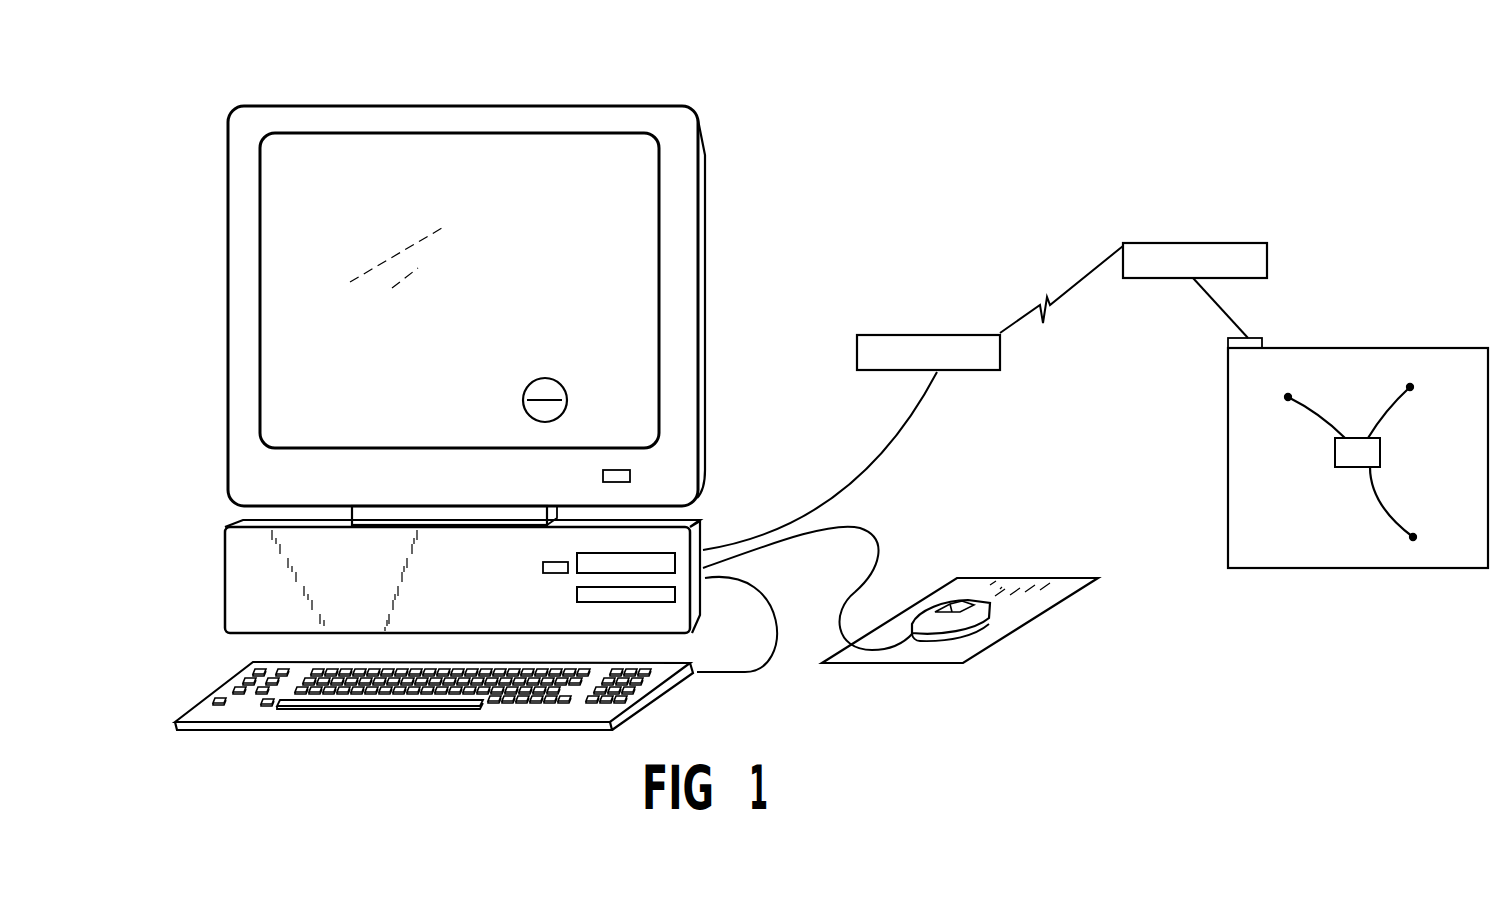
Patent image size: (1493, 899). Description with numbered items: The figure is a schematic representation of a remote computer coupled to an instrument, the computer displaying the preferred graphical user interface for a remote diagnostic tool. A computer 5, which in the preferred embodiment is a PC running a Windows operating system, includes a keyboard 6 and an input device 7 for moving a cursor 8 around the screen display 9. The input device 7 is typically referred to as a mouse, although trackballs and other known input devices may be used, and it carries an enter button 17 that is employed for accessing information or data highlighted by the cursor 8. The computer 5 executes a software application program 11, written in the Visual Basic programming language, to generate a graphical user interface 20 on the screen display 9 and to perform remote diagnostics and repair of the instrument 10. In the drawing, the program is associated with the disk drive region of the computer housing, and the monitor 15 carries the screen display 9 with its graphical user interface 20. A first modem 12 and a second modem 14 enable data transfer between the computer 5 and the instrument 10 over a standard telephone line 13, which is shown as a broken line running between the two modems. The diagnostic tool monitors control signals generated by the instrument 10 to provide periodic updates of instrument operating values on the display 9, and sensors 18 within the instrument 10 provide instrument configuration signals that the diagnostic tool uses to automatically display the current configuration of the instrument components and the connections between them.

The computer 5 is at (706, 588).
The keyboard 6 is at (690, 673).
The input device 7 is at (920, 628).
The cursor 8 is at (546, 377).
The screen display 9 is at (645, 245).
The instrument 10 is at (1443, 348).
The software application program 11 is at (655, 553).
The first modem 12 is at (968, 371).
The telephone line 13 is at (1052, 312).
The second modem 14 is at (1240, 243).
The monitor 15 is at (660, 105).
The enter button 17 is at (957, 603).
The sensors 18 is at (1381, 452).
The graphical user interface 20 is at (430, 132).